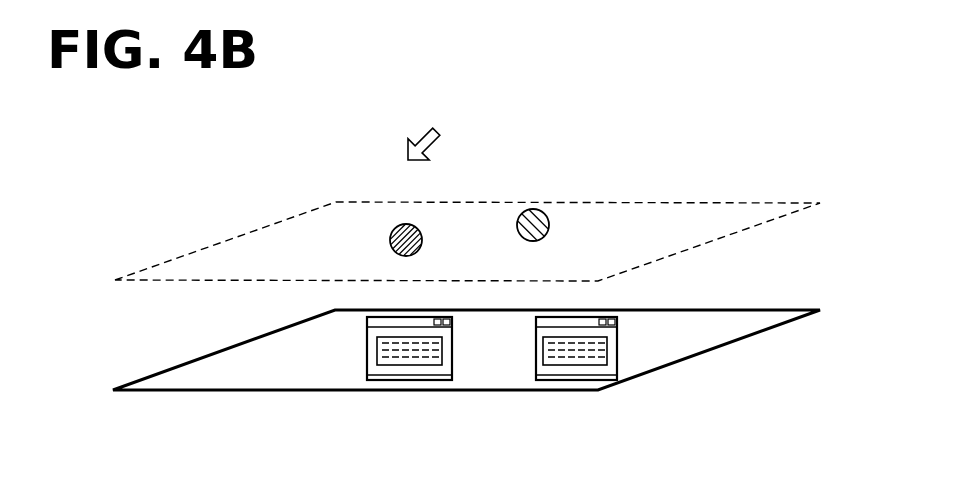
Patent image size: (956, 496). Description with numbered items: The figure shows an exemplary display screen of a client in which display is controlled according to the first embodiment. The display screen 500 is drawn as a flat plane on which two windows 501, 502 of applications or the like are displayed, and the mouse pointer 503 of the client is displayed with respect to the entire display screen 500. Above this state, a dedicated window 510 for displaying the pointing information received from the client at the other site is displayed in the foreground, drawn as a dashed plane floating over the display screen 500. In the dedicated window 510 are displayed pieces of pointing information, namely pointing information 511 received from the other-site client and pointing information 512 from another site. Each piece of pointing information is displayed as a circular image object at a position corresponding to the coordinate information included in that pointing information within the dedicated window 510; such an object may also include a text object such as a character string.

The display screen 500 is at (780, 326).
The window 501 is at (401, 380).
The window 502 is at (580, 380).
The mouse pointer 503 is at (418, 137).
The dedicated window 510 is at (780, 202).
The pointing information 511 is at (398, 228).
The pointing information 512 is at (537, 210).